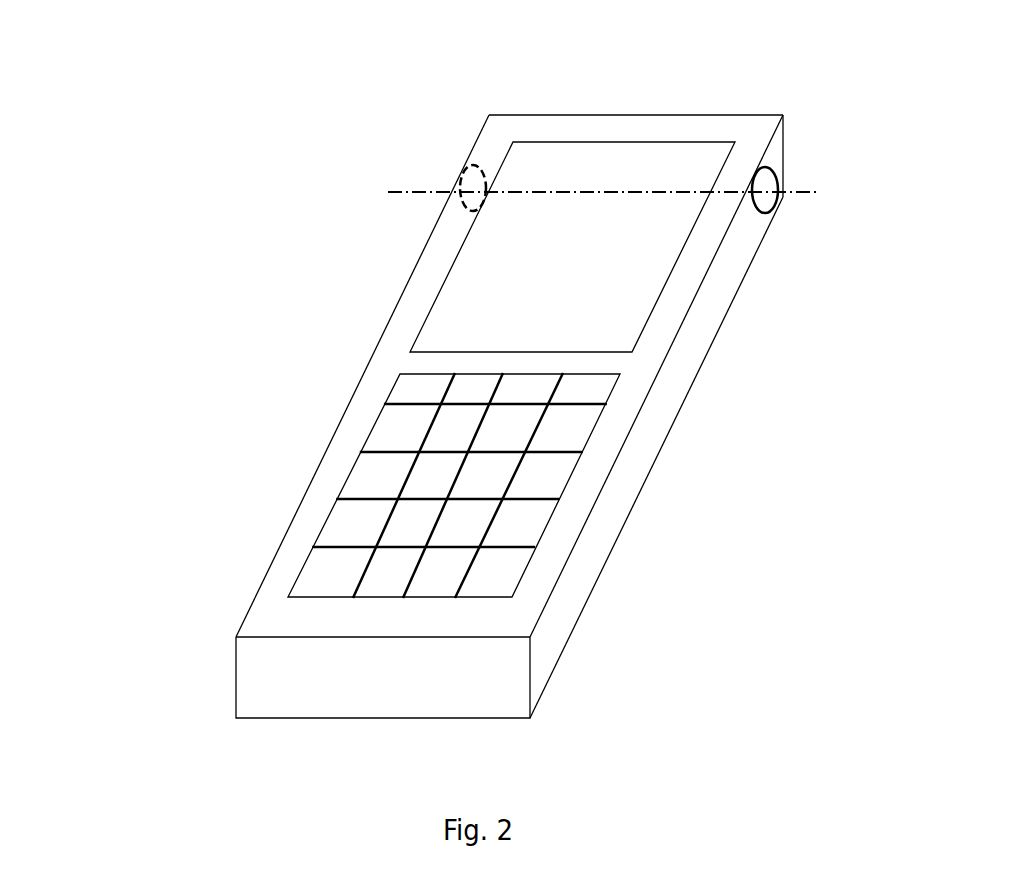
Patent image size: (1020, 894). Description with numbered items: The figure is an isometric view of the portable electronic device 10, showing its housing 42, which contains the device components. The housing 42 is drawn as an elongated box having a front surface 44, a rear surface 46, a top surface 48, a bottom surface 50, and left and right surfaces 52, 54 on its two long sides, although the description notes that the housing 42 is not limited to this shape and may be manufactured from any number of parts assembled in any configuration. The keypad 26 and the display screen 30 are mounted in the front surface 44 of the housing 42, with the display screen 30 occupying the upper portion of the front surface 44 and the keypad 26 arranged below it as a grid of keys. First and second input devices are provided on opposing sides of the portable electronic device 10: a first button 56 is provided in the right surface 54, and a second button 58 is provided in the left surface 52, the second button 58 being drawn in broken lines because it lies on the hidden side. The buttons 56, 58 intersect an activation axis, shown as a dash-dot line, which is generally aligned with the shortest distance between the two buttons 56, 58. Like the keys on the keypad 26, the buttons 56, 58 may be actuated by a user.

The portable electronic device 10 is at (471, 380).
The keypad 26 is at (374, 471).
The display screen 30 is at (497, 299).
The housing 42 is at (678, 399).
The front surface 44 is at (481, 329).
The rear surface 46 is at (585, 574).
The top surface 48 is at (572, 68).
The bottom surface 50 is at (235, 697).
The left surface 52 is at (275, 559).
The right surface 54 is at (659, 416).
The first button 56 is at (767, 183).
The second button 58 is at (462, 178).